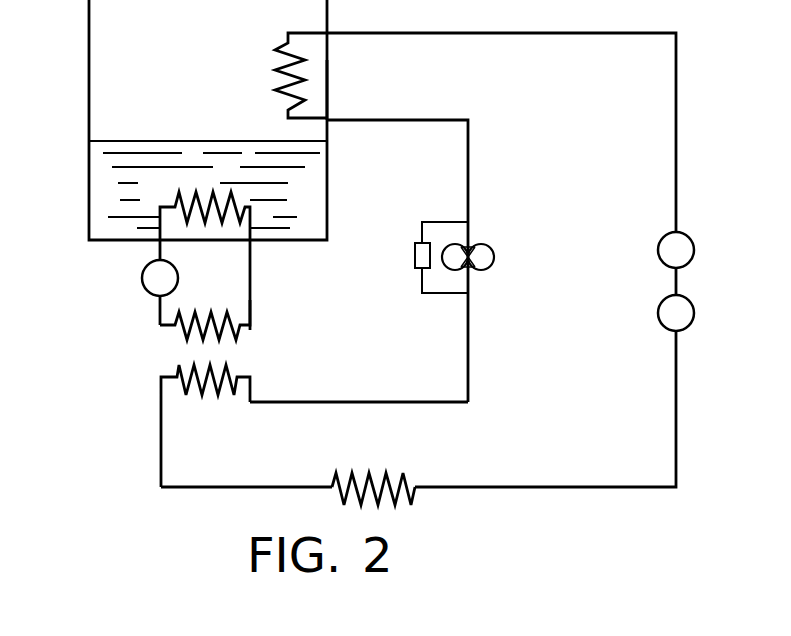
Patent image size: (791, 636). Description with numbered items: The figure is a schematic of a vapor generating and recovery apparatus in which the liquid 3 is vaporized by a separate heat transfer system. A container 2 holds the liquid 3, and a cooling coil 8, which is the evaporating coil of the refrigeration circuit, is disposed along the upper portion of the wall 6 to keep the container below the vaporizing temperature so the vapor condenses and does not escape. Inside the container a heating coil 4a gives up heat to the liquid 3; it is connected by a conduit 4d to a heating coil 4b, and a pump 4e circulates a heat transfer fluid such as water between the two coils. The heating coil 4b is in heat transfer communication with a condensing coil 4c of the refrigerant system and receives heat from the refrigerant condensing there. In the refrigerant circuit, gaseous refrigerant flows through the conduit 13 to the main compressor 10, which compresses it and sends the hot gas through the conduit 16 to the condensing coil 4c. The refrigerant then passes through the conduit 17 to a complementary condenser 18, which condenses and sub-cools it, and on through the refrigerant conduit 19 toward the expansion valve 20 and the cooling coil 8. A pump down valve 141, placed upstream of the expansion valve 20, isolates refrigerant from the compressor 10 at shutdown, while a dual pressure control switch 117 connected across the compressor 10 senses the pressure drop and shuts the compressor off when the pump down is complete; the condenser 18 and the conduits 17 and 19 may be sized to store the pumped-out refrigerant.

The container 2 is at (88, 122).
The liquid 3 is at (98, 180).
The heating coil 4a is at (195, 192).
The heating coil 4b is at (180, 330).
The condensing coil 4c is at (225, 368).
The conduit 4d is at (252, 310).
The pump 4e is at (152, 294).
The wall 6 is at (327, 87).
The cooling coil 8 is at (293, 78).
The main compressor 10 is at (480, 268).
The refrigerant suction conduit 13 is at (468, 155).
The conduit 16 is at (428, 399).
The conduit 17 is at (285, 490).
The complementary condenser 18 is at (370, 478).
The refrigerant conduit 19 is at (567, 486).
The expansion valve 20 is at (694, 258).
The dual pressure control switch 117 is at (415, 252).
The pump down valve 141 is at (694, 313).